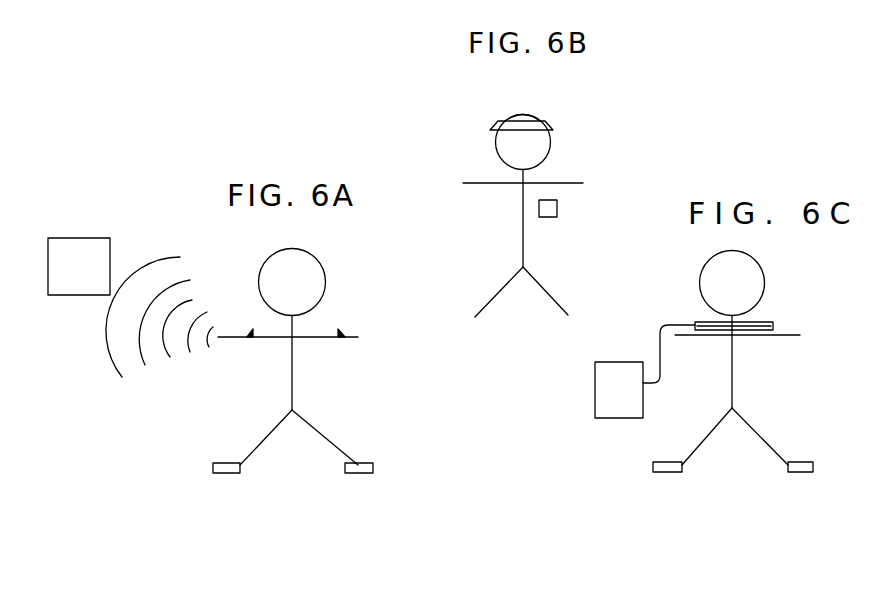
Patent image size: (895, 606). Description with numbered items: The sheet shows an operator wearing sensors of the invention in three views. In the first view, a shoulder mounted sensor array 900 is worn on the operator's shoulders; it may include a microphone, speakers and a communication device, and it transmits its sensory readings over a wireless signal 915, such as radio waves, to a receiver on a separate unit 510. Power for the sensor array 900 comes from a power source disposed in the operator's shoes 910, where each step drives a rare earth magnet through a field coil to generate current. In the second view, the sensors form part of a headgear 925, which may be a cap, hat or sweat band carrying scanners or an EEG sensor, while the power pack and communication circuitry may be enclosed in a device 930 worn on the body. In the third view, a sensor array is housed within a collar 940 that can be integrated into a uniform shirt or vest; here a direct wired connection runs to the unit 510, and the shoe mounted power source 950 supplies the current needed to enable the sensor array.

In FIG. 6A, the external device / transmitter 510 is at (75, 250).
In FIG. 6C, the external device / transmitter 510 is at (607, 407).
In FIG. 6A, the shoulder mounted sensor array 900 is at (243, 321).
In FIG. 6A, the operator's shoes 910 is at (365, 457).
In FIG. 6A, the wireless signal 915 is at (152, 360).
In FIG. 6B, the headgear 925 is at (552, 120).
In FIG. 6B, the device 930 is at (547, 217).
In FIG. 6C, the collar 940 is at (697, 322).
In FIG. 6C, the foot-worn sensor 950 is at (660, 472).